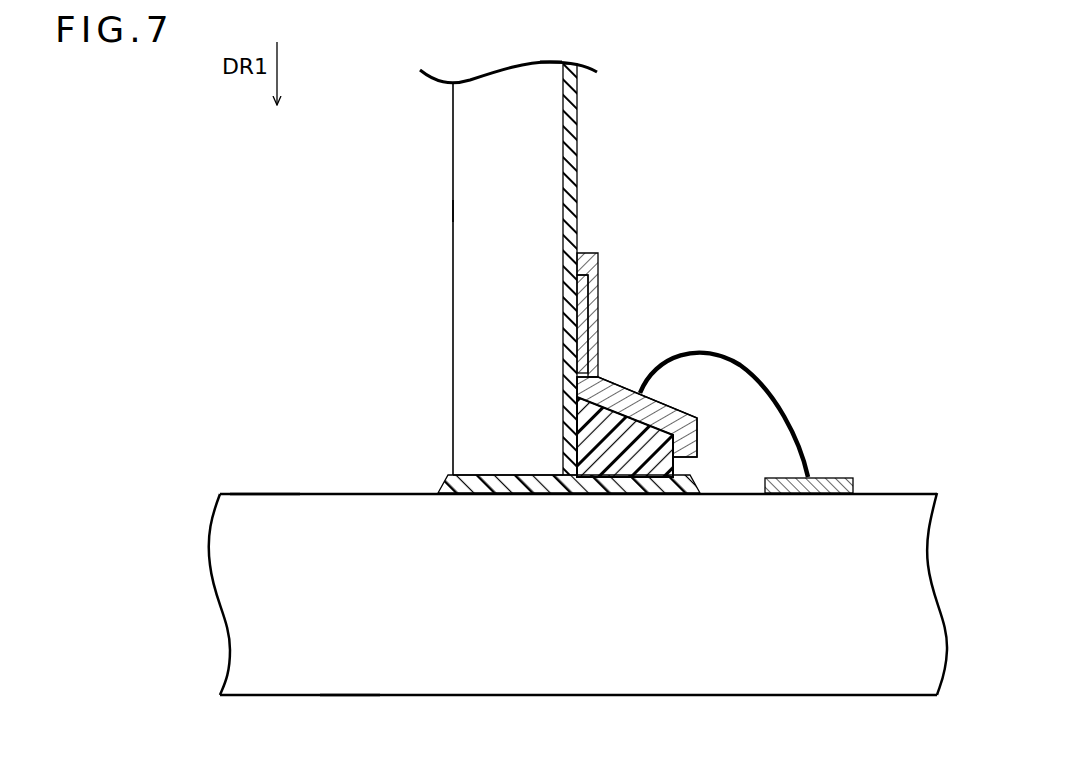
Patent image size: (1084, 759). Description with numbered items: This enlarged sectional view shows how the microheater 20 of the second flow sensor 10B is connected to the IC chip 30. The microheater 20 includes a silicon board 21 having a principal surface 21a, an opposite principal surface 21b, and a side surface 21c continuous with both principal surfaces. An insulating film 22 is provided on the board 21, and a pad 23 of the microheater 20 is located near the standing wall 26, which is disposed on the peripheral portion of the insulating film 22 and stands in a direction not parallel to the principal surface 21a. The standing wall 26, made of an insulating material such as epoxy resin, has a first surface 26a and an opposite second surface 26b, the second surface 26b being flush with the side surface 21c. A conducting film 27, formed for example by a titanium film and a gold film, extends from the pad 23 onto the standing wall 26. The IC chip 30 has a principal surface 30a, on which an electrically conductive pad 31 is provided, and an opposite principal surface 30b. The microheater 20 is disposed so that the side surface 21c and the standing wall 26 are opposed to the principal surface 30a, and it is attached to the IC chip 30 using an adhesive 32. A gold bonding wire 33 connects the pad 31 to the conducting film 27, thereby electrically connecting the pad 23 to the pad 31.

The second flow sensor 10B is at (890, 313).
The microheater 20 is at (425, 310).
The board 21 is at (463, 137).
The principal surface 21a is at (560, 120).
The principal surface 21b is at (452, 210).
The side surface 21c is at (523, 477).
The insulating film 22 is at (577, 108).
The pad 23 is at (587, 325).
The standing wall 26 is at (675, 460).
The first surface 26a is at (600, 412).
The second surface 26b is at (590, 458).
The conducting film 27 is at (595, 258).
The IC chip 30 is at (644, 680).
The principal surface 30a is at (262, 494).
The principal surface 30b is at (348, 695).
The pad 31 is at (833, 477).
The adhesive 32 is at (450, 494).
The bonding wire 33 is at (764, 390).